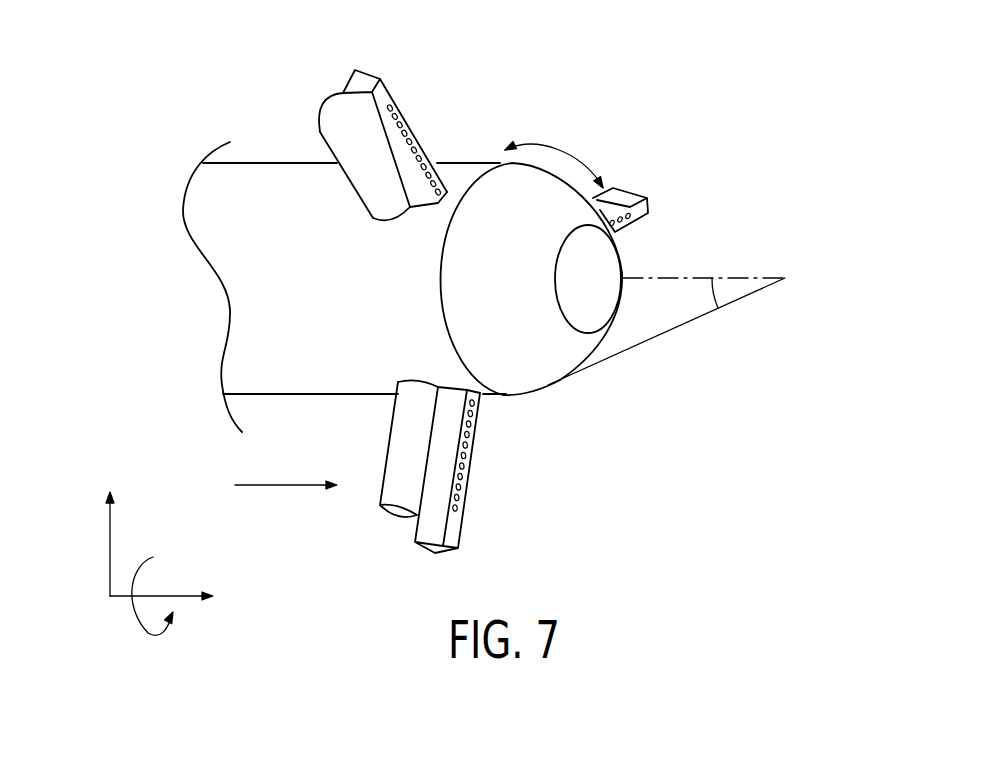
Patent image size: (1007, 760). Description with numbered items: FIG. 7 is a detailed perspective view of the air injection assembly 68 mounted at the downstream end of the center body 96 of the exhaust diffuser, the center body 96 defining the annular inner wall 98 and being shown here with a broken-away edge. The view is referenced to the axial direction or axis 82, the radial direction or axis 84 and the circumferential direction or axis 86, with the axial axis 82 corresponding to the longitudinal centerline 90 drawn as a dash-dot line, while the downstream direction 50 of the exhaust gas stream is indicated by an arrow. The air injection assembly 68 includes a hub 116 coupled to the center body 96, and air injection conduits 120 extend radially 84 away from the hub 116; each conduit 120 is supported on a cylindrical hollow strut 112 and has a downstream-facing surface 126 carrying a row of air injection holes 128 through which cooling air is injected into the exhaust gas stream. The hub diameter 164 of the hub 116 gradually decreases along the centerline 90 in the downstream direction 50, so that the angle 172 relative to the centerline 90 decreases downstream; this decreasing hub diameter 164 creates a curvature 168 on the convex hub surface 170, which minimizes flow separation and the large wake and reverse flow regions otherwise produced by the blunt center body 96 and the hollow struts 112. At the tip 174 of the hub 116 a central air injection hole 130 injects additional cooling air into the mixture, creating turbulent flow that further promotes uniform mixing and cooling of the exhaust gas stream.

The downstream direction 50 is at (280, 487).
The air injection assembly 68 is at (650, 170).
The axial direction or axis 82 is at (177, 595).
The radial direction or axis 84 is at (110, 553).
The circumferential direction or axis 86 is at (140, 628).
The longitudinal centerline 90 is at (781, 282).
The center body 96 is at (311, 296).
The annular inner wall 98 is at (268, 163).
The hollow struts 112 is at (365, 175).
The hub 116 is at (553, 410).
The air injection conduits 120 is at (387, 84).
The downstream-facing surface 126 is at (437, 173).
The air injection holes 128 is at (402, 133).
The central air injection hole 130 is at (598, 295).
The hub diameter 164 is at (506, 172).
The curvature 168 is at (573, 153).
The hub surface 170 is at (605, 338).
The angle 172 is at (697, 316).
The tip 174 is at (634, 258).